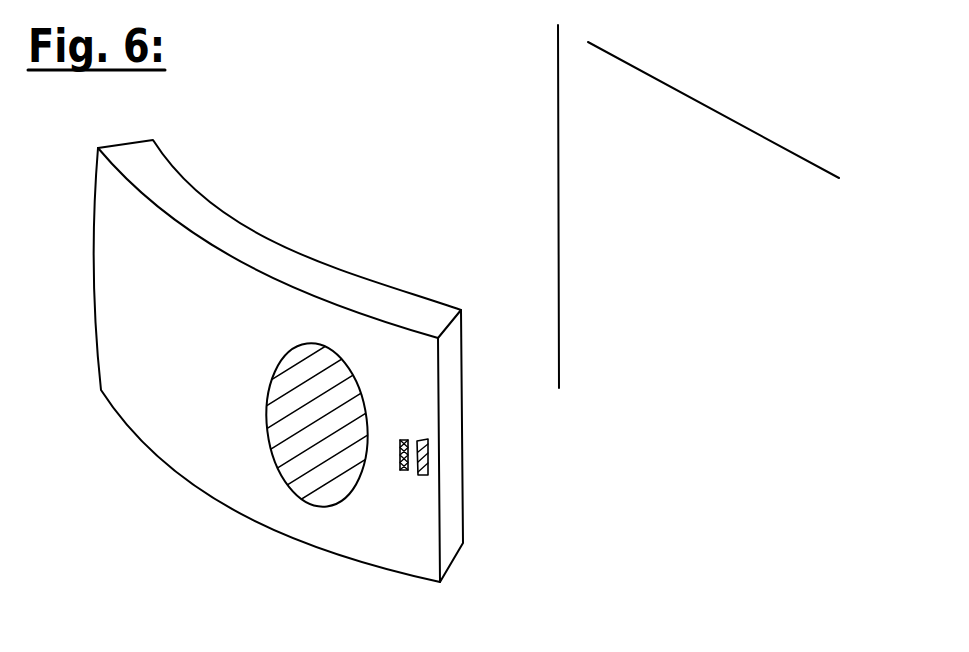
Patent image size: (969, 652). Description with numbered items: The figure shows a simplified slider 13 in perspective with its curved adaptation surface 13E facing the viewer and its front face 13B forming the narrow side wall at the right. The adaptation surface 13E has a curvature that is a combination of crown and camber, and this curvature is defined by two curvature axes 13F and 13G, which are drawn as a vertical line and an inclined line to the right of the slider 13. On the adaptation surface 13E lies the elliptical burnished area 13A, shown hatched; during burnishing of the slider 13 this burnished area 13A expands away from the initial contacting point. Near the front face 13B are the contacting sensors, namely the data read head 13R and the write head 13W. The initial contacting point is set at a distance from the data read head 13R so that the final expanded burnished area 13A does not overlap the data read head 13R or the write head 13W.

The slider 13 is at (205, 213).
The burnished area 13A is at (347, 490).
The front face 13B is at (448, 370).
The adaptation surface 13E is at (157, 432).
The curvature axis 13F is at (558, 155).
The curvature axis 13G is at (713, 112).
The data read head 13R is at (403, 470).
The write head 13W is at (428, 440).